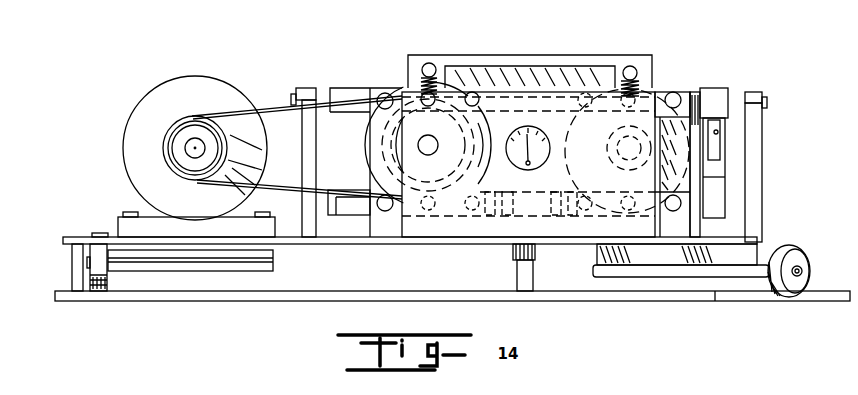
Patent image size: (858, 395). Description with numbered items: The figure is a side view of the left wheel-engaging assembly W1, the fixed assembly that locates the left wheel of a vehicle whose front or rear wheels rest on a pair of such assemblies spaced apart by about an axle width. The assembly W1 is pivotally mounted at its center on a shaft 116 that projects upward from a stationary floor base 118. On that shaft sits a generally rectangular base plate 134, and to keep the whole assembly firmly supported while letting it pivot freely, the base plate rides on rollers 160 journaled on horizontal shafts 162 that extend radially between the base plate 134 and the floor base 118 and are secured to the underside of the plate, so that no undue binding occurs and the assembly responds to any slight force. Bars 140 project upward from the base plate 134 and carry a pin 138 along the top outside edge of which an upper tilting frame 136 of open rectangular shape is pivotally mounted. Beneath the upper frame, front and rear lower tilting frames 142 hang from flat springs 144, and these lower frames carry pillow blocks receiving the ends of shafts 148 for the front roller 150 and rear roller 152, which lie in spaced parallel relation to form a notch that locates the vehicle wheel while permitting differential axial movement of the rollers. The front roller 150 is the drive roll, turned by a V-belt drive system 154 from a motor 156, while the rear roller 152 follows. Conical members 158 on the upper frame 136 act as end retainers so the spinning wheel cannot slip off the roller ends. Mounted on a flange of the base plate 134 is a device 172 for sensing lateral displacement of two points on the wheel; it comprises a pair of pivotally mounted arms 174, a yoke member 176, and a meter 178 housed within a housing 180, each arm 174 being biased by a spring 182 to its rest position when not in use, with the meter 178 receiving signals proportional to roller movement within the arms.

The shaft 116 is at (518, 270).
The stationary floor base 118 is at (667, 301).
The base plate 134 is at (421, 240).
The upper tilting frame 136 is at (730, 89).
The pin 138 is at (320, 93).
The bars 140 is at (317, 127).
The lower tilting frames 142 is at (352, 217).
The flat springs 144 is at (372, 175).
The shafts 148 is at (416, 147).
The front roller 150 is at (403, 86).
The rear roller 152 is at (656, 90).
The V-belt drive system 154 is at (277, 107).
The motor 156 is at (134, 117).
The conical members 158 is at (522, 72).
The rollers 160 is at (104, 291).
The horizontal shafts 162 is at (204, 262).
The device for sensing lateral displacement 172 is at (556, 222).
The pivotally mounted arms 174 is at (435, 65).
The yoke member 176 is at (502, 54).
The meter 178 is at (526, 169).
The housing 180 is at (652, 88).
The spring 182 is at (423, 62).
The left wheel-engaging assembly W1 is at (697, 86).